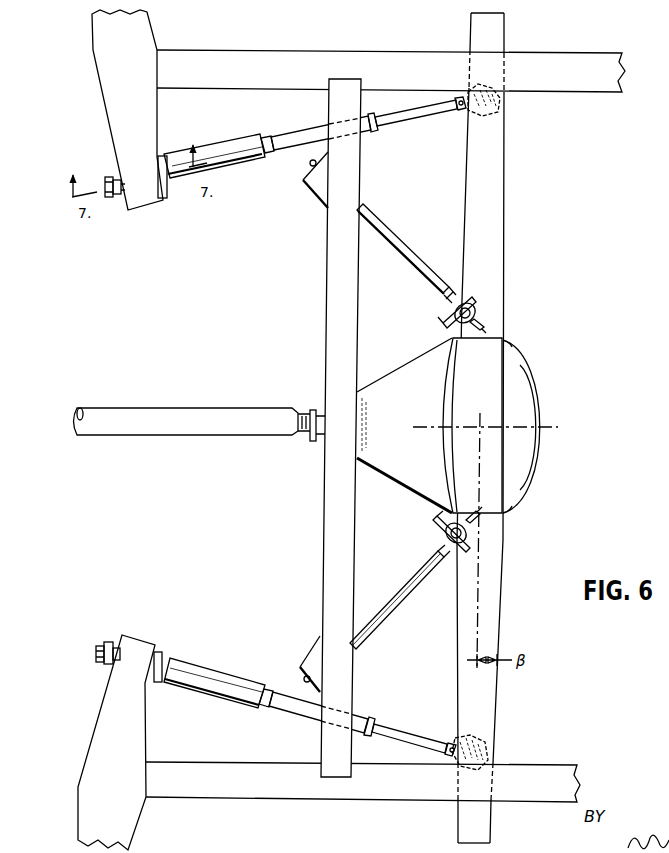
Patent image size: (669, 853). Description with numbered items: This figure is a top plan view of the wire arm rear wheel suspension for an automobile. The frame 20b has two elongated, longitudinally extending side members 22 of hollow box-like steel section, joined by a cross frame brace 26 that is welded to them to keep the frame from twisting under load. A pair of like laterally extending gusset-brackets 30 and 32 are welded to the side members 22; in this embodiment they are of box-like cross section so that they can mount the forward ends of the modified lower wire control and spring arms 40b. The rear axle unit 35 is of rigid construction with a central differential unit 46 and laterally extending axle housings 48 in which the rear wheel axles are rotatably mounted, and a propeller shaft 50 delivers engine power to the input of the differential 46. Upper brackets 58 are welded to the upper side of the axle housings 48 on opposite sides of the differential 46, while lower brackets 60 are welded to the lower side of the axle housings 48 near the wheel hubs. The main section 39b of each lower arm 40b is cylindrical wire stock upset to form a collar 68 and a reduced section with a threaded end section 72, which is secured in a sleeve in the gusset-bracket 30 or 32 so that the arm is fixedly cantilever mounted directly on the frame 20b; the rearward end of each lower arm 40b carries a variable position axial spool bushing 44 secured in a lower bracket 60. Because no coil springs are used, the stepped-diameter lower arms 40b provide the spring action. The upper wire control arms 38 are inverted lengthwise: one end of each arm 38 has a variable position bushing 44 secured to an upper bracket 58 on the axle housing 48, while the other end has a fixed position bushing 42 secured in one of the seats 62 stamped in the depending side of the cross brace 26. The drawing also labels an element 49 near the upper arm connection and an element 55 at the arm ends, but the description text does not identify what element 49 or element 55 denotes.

The frame 20b is at (576, 51).
The longitudinal side members 22 is at (252, 62).
The cross frame brace 26 is at (327, 275).
The gusset-bracket 30 is at (150, 118).
The gusset-bracket 32 is at (140, 737).
The rear axle unit 35 is at (514, 329).
The upper wire control arm 38 is at (402, 255).
The main section of lower arm 39b is at (226, 158).
The lower wire control and spring arm 40b is at (278, 138).
The fixed position axial bushing 42 is at (310, 163).
The variable position axial bushing 44 is at (463, 111).
The differential unit 46 is at (418, 370).
The axle housings 48 is at (505, 178).
The nut 49 is at (456, 291).
The propeller shaft 50 is at (225, 440).
The rod end clevis 55 is at (460, 96).
The upper bracket 58 is at (476, 296).
The lower bracket 60 is at (498, 113).
The upper arm seat 62 is at (303, 182).
The collar 68 is at (163, 166).
The threaded end section 72 is at (108, 186).